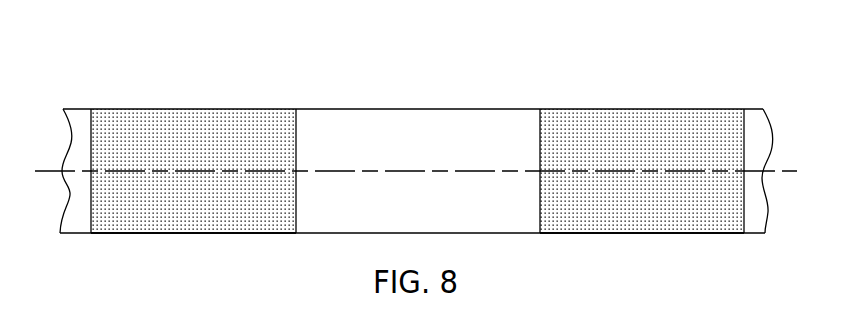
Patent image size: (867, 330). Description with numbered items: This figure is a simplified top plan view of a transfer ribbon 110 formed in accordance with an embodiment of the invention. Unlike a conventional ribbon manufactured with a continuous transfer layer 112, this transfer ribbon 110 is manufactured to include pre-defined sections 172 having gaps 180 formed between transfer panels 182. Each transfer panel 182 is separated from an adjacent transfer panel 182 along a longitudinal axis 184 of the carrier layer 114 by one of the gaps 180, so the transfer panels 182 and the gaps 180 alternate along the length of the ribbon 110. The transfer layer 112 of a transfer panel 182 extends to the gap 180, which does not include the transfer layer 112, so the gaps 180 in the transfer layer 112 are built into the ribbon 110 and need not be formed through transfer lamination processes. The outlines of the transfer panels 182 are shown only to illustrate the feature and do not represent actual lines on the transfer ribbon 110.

The transfer ribbon 110 is at (134, 46).
The transfer layer 112 is at (128, 225).
The carrier layer 114 is at (70, 195).
The section 172 is at (71, 142).
The gap 180 is at (78, 117).
The transfer panel 182 is at (195, 117).
The longitudinal axis 184 is at (435, 170).